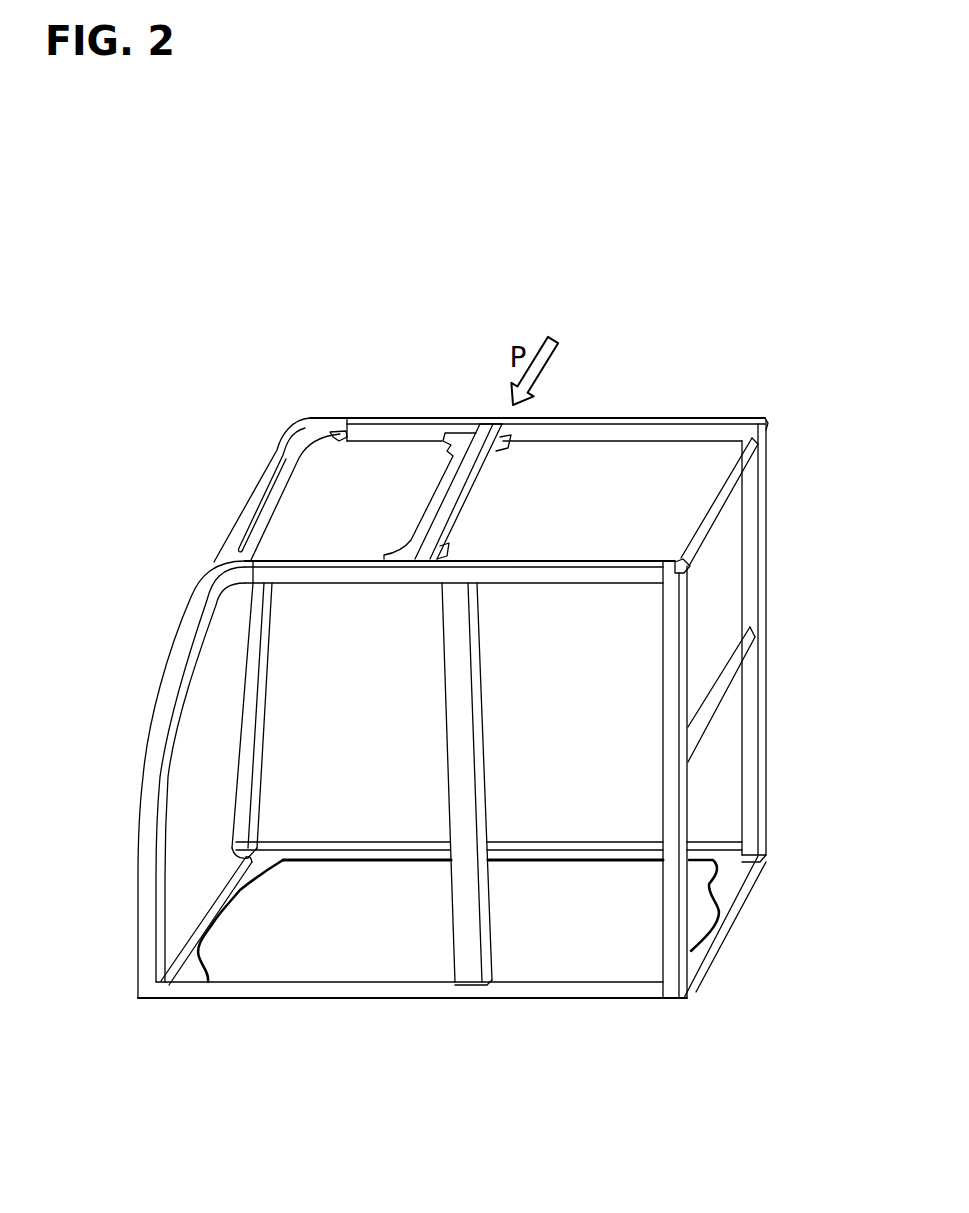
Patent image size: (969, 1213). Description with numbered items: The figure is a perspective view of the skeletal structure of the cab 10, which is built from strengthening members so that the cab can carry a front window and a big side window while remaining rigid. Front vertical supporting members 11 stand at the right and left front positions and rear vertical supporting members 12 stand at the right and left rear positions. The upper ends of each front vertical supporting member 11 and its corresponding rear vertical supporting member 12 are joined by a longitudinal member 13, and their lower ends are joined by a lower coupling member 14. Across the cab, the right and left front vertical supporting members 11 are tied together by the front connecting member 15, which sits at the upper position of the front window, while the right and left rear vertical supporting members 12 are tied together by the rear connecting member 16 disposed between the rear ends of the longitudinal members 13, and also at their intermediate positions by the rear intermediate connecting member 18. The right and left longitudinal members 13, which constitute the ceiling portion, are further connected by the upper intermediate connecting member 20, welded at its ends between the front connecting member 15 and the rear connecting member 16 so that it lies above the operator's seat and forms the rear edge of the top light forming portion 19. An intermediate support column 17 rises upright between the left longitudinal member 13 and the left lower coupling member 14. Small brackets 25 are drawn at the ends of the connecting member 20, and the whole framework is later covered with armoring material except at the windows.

The cab 10 is at (606, 398).
The front vertical supporting member 11 is at (243, 745).
The rear vertical supporting member 12 is at (762, 628).
The longitudinal member 13 is at (410, 418).
The lower coupling member 14 is at (391, 842).
The front connecting member 15 is at (272, 482).
The rear connecting member 16 is at (726, 495).
The intermediate support column 17 is at (458, 683).
The rear intermediate connecting member 18 is at (696, 741).
The top light forming portion 19 is at (370, 513).
The upper intermediate connecting member 20 is at (480, 497).
The bracket 25 is at (492, 451).